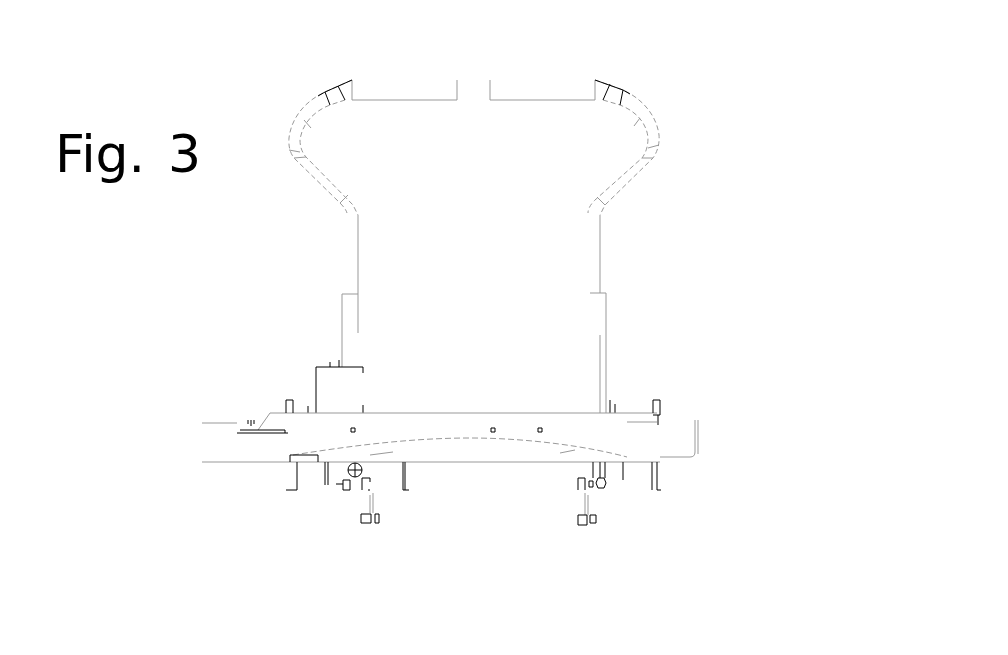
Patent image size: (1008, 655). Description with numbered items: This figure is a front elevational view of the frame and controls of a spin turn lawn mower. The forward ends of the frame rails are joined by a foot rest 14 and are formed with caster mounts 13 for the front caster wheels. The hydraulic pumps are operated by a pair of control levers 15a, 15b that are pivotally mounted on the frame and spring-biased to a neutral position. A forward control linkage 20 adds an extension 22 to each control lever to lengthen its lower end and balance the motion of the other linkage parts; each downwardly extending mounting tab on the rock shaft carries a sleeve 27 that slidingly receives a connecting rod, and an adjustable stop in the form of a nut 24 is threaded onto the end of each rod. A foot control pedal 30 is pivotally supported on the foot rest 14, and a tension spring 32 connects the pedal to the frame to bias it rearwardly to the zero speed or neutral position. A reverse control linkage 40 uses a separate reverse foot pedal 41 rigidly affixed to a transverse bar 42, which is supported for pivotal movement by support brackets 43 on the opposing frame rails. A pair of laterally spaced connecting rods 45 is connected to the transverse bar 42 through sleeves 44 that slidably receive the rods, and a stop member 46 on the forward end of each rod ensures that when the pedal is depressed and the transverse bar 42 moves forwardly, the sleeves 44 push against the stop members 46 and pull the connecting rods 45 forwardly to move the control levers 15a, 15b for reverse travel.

The caster mounts 13 is at (210, 437).
The foot rest 14 is at (518, 417).
The control lever 15a is at (533, 86).
The control lever 15b is at (405, 86).
The forward control linkage 20 is at (222, 529).
The extension 22 is at (607, 475).
The nut 24 is at (345, 487).
The sleeve 27 is at (342, 485).
The foot control pedal 30 is at (345, 397).
The tension spring 32 is at (347, 469).
The reverse control linkage 40 is at (707, 549).
The reverse foot pedal 41 is at (407, 473).
The transverse bar 42 is at (362, 493).
The support brackets 43 is at (290, 400).
The sleeves 44 is at (365, 520).
The connecting rods 45 is at (577, 503).
The stop member 46 is at (367, 520).